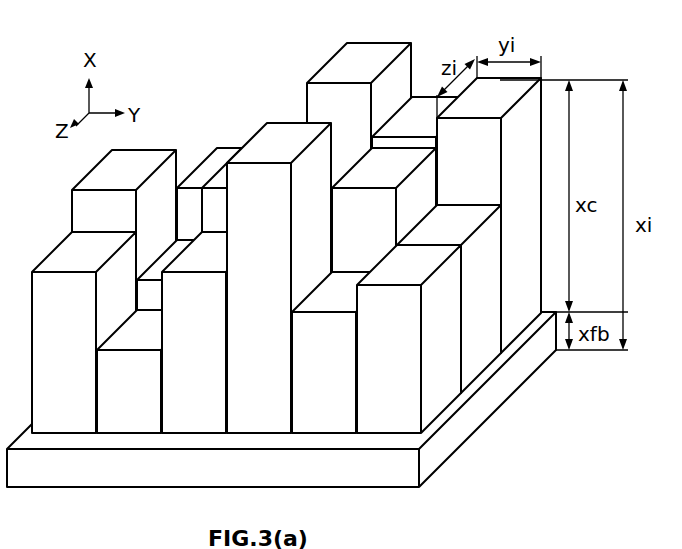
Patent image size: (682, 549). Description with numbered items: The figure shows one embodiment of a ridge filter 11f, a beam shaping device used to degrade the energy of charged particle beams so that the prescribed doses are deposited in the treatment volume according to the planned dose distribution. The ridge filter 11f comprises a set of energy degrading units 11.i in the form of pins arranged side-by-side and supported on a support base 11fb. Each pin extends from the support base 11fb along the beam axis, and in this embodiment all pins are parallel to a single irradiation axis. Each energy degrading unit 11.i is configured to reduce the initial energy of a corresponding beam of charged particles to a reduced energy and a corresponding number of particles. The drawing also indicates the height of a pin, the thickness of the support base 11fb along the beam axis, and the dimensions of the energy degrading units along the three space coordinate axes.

The ridge filter 11f is at (286, 225).
The energy degrading unit 11.i is at (249, 137).
The support base 11fb is at (478, 401).